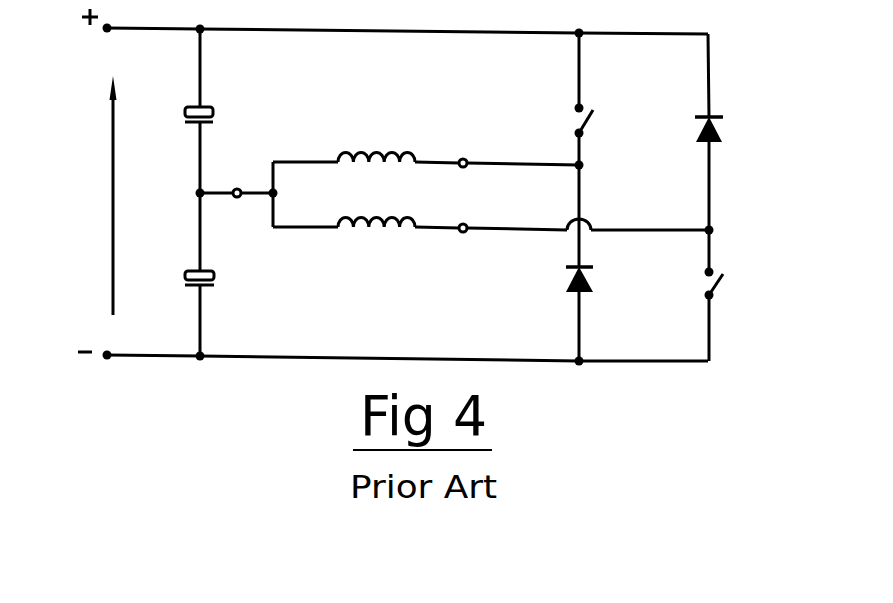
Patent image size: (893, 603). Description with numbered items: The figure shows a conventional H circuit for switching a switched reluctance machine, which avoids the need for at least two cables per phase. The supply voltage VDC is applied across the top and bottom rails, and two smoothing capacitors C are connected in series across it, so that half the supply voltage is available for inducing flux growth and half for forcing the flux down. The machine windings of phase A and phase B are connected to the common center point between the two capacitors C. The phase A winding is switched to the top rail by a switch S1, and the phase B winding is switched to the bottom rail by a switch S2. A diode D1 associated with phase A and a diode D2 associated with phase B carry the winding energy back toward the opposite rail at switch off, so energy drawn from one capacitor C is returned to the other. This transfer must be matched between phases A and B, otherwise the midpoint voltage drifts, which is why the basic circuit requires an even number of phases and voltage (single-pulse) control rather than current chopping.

The supply voltage VDC is at (79, 195).
The smoothing capacitor C is at (221, 201).
The winding of phase A is at (426, 138).
The winding of phase B is at (491, 247).
The switch S1 is at (610, 124).
The switch S2 is at (747, 291).
The diode D1 is at (607, 289).
The diode D2 is at (742, 126).